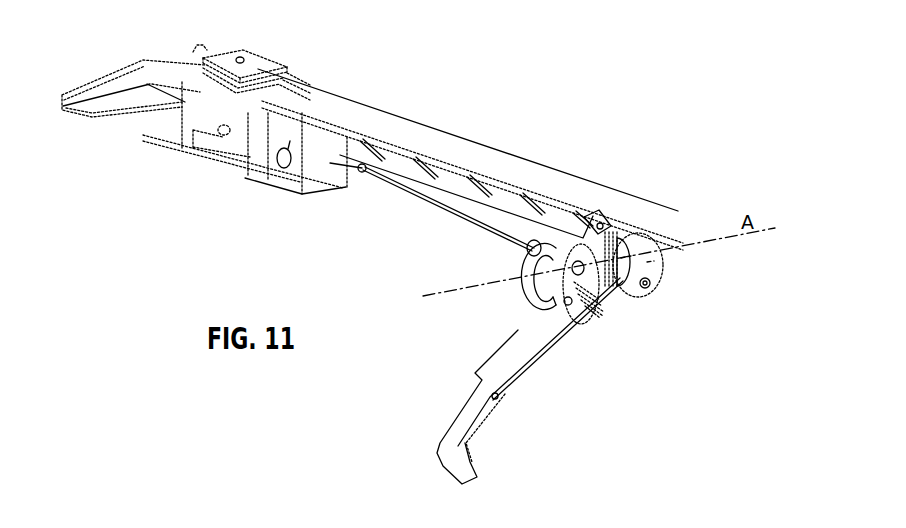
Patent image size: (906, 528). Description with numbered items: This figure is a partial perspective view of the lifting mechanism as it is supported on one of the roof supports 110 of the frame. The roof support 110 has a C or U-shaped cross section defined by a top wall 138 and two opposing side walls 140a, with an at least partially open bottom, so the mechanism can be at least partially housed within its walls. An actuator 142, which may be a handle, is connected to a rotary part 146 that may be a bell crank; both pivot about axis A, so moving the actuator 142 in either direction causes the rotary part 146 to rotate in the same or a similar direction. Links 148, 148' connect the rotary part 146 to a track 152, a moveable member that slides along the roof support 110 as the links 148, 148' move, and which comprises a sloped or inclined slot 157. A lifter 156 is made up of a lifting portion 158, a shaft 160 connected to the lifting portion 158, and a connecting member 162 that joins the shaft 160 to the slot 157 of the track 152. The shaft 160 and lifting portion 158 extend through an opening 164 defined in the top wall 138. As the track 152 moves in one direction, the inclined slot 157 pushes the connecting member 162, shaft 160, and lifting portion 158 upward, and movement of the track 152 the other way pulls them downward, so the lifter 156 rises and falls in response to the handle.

The roof support 110 is at (576, 195).
The top wall 138 is at (349, 113).
The side wall 140a is at (168, 83).
The actuator 142 is at (513, 350).
The rotary part 146 is at (618, 270).
The link 148 is at (486, 294).
The link 148' is at (449, 166).
The track 152 is at (256, 160).
The lifter 156 is at (268, 55).
The slot 157 is at (227, 88).
The lifting portion 158 is at (227, 53).
The shaft 160 is at (238, 81).
The connecting member 162 is at (237, 133).
The opening 164 is at (237, 82).